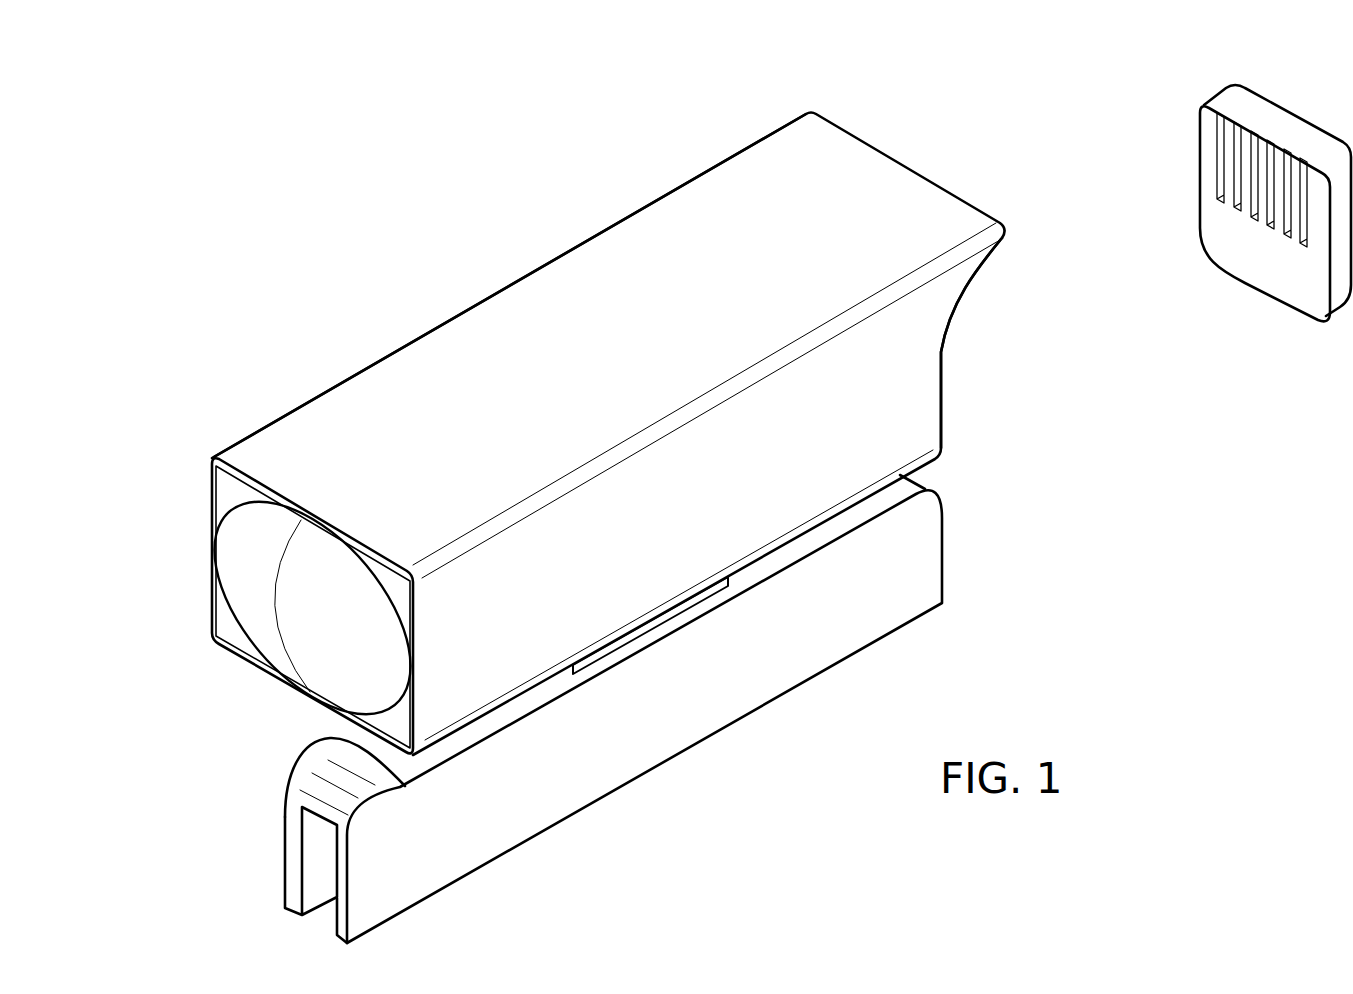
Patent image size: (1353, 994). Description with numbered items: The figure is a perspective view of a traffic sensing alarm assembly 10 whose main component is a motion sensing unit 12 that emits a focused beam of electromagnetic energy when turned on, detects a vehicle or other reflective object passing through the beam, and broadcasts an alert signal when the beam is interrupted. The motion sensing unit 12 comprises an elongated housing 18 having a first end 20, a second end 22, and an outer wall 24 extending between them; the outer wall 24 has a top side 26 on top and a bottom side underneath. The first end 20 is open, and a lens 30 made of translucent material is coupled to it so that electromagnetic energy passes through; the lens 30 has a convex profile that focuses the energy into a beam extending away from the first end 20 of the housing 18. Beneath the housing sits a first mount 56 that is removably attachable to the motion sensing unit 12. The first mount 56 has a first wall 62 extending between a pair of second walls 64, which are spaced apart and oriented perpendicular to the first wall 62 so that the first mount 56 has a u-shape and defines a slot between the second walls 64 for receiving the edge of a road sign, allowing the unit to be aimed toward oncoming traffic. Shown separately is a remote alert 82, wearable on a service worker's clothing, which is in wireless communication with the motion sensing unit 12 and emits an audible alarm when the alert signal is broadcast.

The traffic sensing alarm assembly 10 is at (578, 490).
The motion sensing unit 12 is at (578, 396).
The housing 18 is at (480, 302).
The first end 20 is at (210, 557).
The second end 22 is at (945, 353).
The outer wall 24 is at (372, 392).
The top side 26 is at (618, 262).
The lens 30 is at (278, 616).
The first mount 56 is at (566, 709).
The first wall 62 is at (348, 763).
The second walls 64 is at (292, 855).
The remote alert 82 is at (1208, 96).